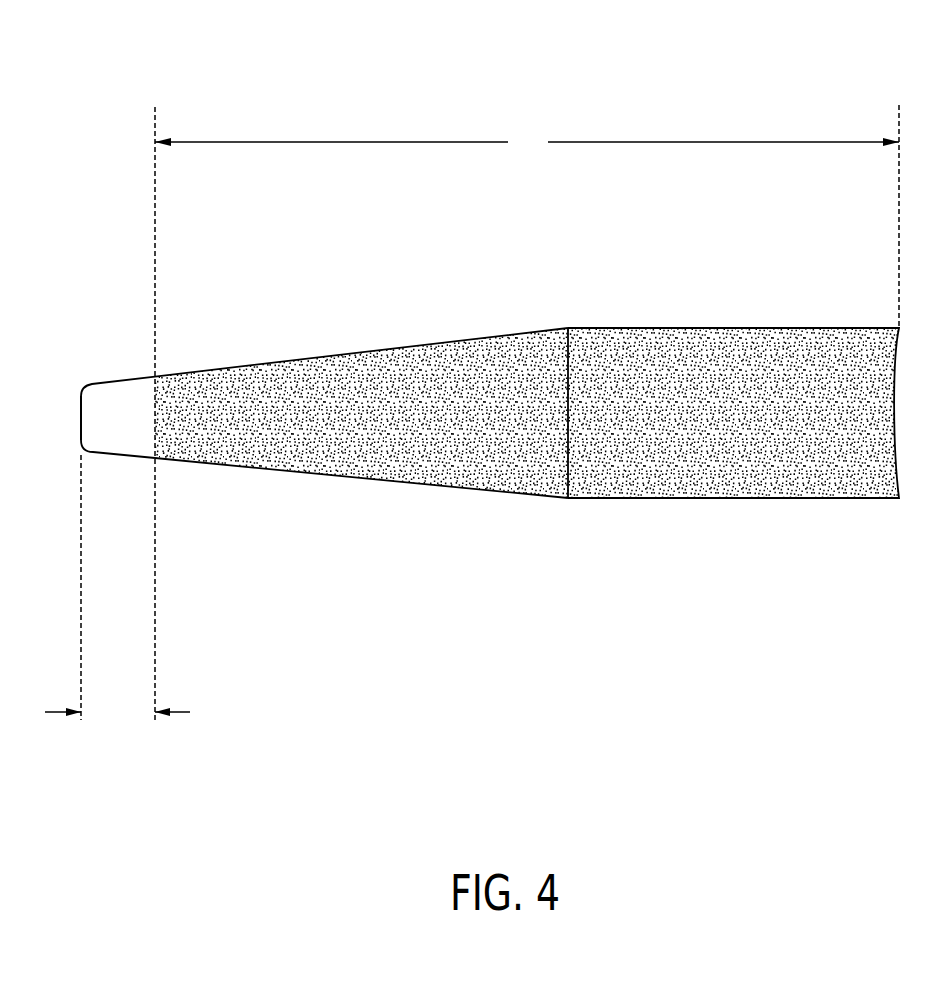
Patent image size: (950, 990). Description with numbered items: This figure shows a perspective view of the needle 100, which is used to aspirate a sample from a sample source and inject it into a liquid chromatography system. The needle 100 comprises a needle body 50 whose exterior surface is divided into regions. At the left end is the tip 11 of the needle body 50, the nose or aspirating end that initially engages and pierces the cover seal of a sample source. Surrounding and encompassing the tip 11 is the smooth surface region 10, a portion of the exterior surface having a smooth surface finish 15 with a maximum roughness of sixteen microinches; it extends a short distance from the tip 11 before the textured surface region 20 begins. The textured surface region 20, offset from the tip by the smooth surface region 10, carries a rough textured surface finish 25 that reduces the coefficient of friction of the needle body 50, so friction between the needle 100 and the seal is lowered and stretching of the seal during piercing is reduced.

The needle 100 is at (465, 398).
The smooth surface region 10 is at (182, 712).
The tip 11 is at (88, 402).
The smooth surface finish 15 is at (113, 382).
The textured surface region 20 is at (527, 142).
The rough textured surface finish 25 is at (400, 347).
The needle body 50 is at (618, 328).